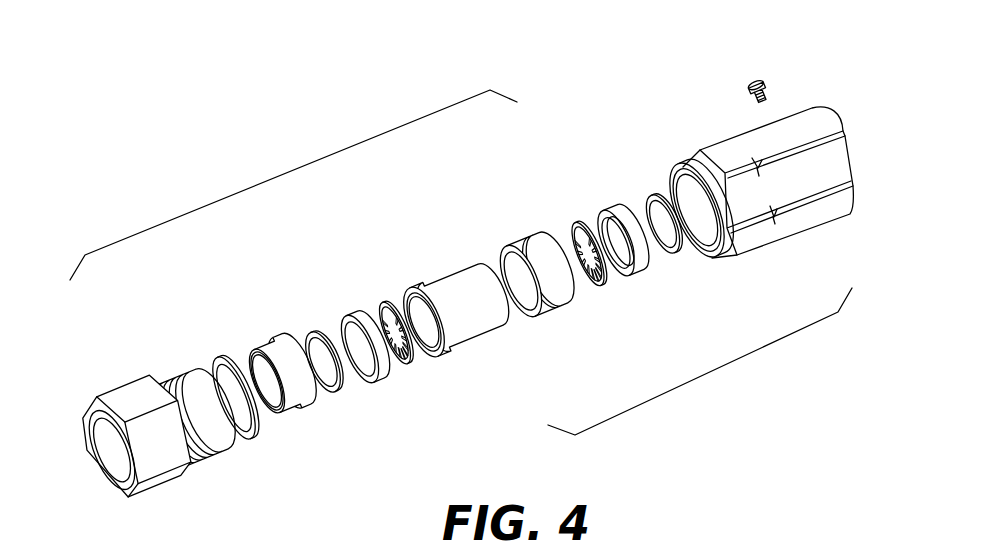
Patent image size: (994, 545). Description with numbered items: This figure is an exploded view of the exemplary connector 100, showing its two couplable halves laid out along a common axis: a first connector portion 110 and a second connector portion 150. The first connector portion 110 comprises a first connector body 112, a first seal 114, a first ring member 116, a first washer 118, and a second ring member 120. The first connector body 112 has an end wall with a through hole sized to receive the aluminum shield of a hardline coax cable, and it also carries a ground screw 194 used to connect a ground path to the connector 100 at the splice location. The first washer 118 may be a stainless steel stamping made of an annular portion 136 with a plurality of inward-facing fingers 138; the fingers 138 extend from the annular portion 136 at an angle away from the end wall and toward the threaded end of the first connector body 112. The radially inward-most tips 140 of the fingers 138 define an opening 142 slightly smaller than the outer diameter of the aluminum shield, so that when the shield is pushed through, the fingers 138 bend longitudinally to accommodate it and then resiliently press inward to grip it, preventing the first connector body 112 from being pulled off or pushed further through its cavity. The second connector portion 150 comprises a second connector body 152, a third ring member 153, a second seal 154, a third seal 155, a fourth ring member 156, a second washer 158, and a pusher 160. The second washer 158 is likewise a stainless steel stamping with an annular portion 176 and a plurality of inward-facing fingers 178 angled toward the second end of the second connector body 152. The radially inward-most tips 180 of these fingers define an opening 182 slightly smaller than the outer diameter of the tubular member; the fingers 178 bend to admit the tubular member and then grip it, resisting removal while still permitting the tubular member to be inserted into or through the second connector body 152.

The connector 100 is at (469, 65).
The first connector portion 110 is at (707, 374).
The first connector body 112 is at (779, 243).
The first seal 114 is at (684, 247).
The first ring member 116 is at (650, 257).
The first washer 118 is at (611, 274).
The second ring member 120 is at (551, 311).
The annular portion 136 is at (580, 227).
The fingers 138 is at (605, 210).
The radially inward-most tips 140 is at (583, 226).
The opening 142 is at (586, 280).
The second connector portion 150 is at (273, 178).
The second connector body 152 is at (124, 386).
The third ring member 153 is at (260, 346).
The second seal 154 is at (310, 333).
The third seal 155 is at (215, 357).
The fourth ring member 156 is at (338, 318).
The second washer 158 is at (381, 309).
The pusher 160 is at (467, 269).
The annular portion 176 is at (413, 357).
The fingers 178 is at (380, 314).
The radially inward-most tips 180 is at (407, 362).
The opening 182 is at (391, 312).
The ground screw 194 is at (757, 83).